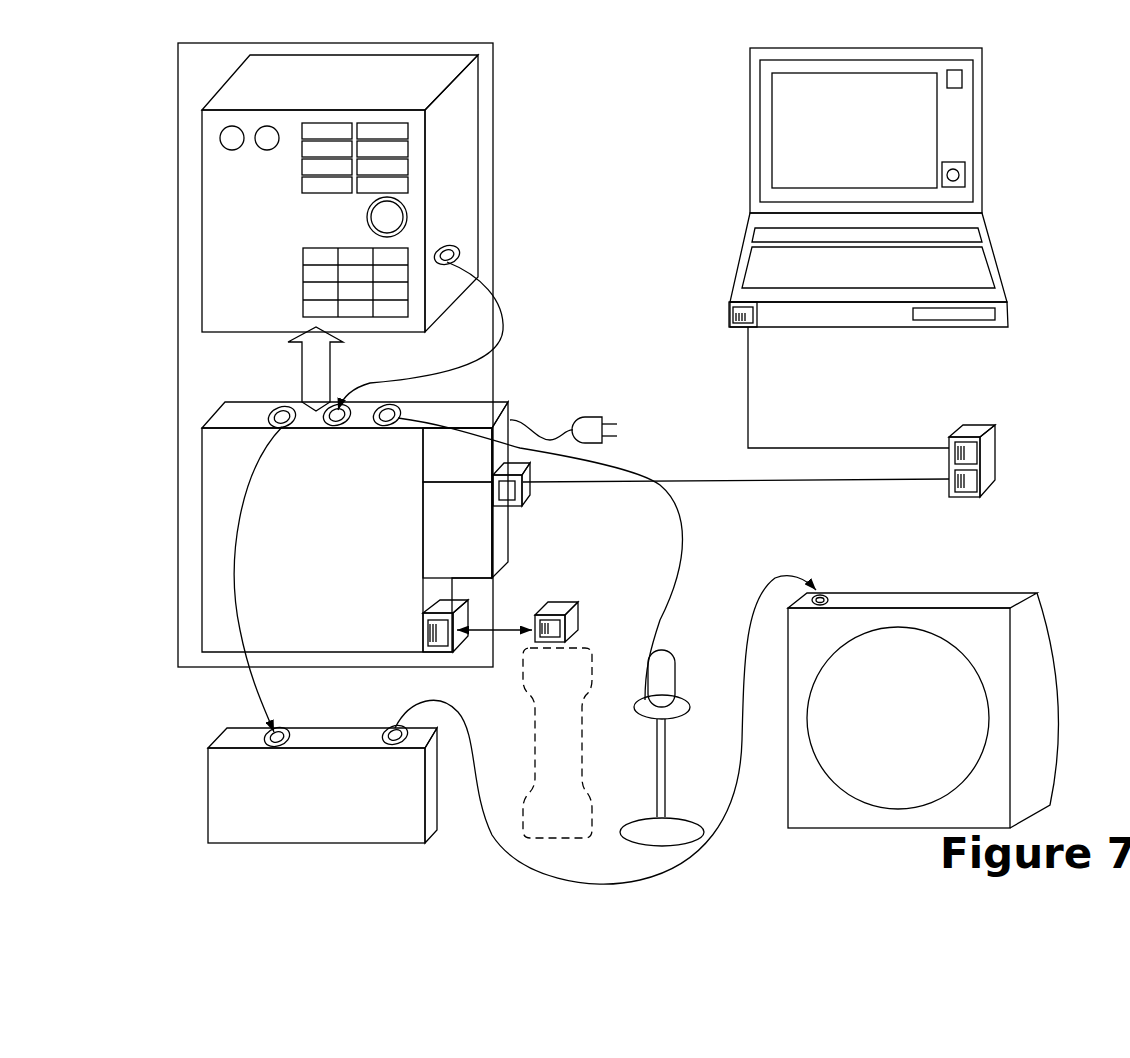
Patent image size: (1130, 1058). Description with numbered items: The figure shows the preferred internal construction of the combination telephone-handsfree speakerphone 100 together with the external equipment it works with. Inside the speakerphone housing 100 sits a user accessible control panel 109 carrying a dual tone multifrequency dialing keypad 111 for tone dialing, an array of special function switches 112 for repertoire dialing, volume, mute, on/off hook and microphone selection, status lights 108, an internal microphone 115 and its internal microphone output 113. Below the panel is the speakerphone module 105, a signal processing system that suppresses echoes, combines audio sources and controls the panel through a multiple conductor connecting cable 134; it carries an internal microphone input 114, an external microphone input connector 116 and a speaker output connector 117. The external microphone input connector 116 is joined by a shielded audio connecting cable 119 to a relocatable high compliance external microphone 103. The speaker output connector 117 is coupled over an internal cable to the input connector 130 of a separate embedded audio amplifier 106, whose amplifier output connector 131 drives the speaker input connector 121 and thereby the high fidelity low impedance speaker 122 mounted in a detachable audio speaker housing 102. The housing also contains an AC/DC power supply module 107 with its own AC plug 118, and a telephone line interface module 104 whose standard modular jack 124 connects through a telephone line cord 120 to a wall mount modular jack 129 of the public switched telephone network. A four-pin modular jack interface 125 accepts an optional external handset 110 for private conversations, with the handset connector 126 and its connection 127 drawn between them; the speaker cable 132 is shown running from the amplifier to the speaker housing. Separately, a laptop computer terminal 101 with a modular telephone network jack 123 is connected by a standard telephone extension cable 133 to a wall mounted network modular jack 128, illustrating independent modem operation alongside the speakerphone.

The handsfree speakerphone 100 is at (498, 70).
The computer terminal 101 is at (1005, 257).
The audio speaker housing 102 is at (923, 710).
The external microphone 103 is at (668, 755).
The telephone line interface module 104 is at (457, 530).
The speakerphone module 105 is at (355, 527).
The audio amplifier 106 is at (322, 798).
The AC/DC power supply module 107 is at (457, 455).
The status lights 108 is at (234, 152).
The control panel 109 is at (336, 193).
The external handset 110 is at (557, 743).
The keypad 111 is at (386, 321).
The switches 112 is at (430, 183).
The internal microphone output 113 is at (445, 240).
The internal microphone input 114 is at (337, 429).
The internal microphone 115 is at (365, 217).
The external microphone input connector 116 is at (387, 429).
The speaker output connector 117 is at (282, 431).
The AC plug 118 is at (587, 412).
The shielded audio connecting cable 119 is at (676, 552).
The telephone line cord 120 is at (736, 446).
The speaker input connector 121 is at (871, 579).
The speaker 122 is at (912, 658).
The modular telephone network jack 123 is at (728, 315).
The modular jack 124 is at (528, 491).
The modular jack interface 125 is at (468, 607).
The handset connector 126 is at (578, 601).
The connection 127 is at (480, 636).
The public switched telephone network modular jack 128 is at (985, 445).
The wall mount modular jack 129 is at (980, 480).
The amplifier input connector 130 is at (249, 607).
The amplifier output connector 131 is at (366, 754).
The speaker cable 132 is at (479, 800).
The telephone extension cable 133 is at (740, 377).
The multiple conductor connecting cable 134 is at (305, 365).